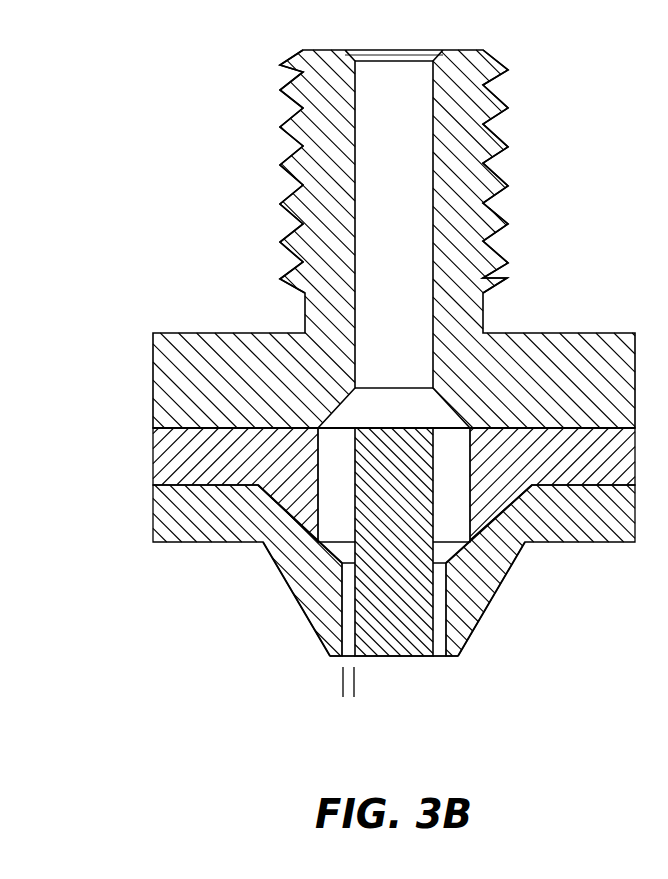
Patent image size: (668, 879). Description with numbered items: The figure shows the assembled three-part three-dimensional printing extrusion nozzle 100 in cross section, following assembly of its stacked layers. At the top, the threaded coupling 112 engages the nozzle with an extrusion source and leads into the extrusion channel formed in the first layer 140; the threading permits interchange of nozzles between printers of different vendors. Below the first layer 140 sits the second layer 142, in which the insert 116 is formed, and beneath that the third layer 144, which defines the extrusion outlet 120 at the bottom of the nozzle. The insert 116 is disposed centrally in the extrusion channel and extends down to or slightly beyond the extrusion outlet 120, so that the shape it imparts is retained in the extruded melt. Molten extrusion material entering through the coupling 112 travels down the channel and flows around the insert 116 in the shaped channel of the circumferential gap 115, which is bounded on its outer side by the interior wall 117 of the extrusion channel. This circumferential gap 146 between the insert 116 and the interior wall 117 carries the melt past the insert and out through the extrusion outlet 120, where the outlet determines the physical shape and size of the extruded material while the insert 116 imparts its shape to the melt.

The 3D printing extrusion nozzle 100 is at (347, 385).
The coupling 112 is at (484, 126).
The first layer 140 is at (152, 382).
The second layer 142 is at (152, 461).
The third layer 144 is at (152, 519).
The insert 116 is at (387, 646).
The interior wall 117 is at (350, 611).
The circumferential gap 115 is at (347, 655).
The extrusion outlet 120 is at (436, 655).
The circumferential gap 146 is at (347, 702).